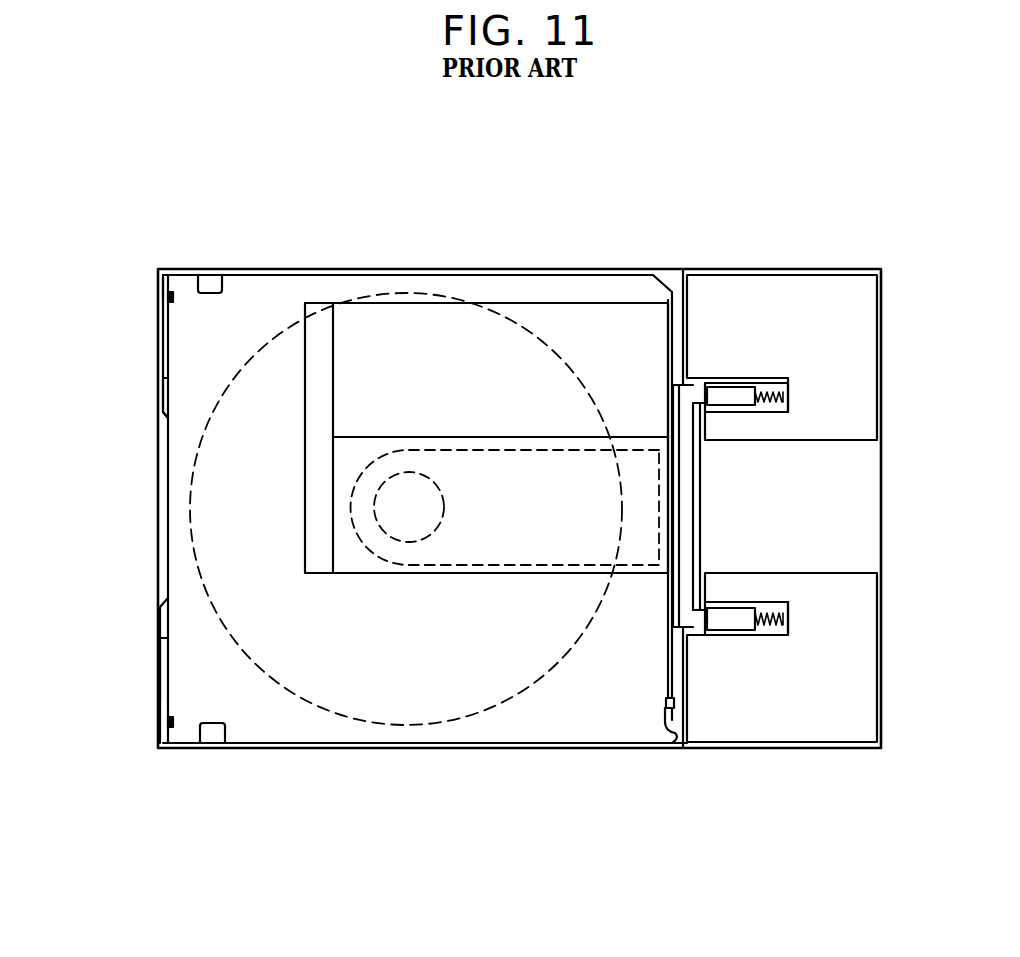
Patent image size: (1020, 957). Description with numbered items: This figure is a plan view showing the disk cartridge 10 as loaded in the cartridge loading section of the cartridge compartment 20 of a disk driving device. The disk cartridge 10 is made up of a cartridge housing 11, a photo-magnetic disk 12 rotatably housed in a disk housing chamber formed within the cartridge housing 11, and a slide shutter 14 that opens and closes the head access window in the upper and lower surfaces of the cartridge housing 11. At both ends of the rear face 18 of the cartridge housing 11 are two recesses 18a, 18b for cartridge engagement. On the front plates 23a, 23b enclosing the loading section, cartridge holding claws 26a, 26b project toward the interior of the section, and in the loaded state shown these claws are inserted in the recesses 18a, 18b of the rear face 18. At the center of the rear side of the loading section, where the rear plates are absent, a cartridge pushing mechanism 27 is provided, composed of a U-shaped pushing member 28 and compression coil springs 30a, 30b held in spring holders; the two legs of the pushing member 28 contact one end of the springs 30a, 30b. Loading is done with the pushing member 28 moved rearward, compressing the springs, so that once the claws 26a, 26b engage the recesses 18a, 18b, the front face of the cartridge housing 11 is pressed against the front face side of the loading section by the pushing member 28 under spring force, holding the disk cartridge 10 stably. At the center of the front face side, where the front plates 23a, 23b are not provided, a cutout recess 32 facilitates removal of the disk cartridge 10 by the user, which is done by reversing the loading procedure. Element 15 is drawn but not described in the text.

The disk cartridge 10 is at (525, 730).
The cartridge housing 11 is at (287, 723).
The photo-magnetic disk 12 is at (400, 723).
The slide shutter 14 is at (637, 577).
The engagement hook 15 is at (680, 705).
The rear face 18 is at (170, 515).
The recess 18a is at (178, 297).
The recess 18b is at (180, 727).
The cartridge compartment 20 is at (517, 265).
The front plate 23a is at (158, 280).
The front plate 23b is at (162, 662).
The cartridge holding claw 26a is at (168, 298).
The cartridge holding claw 26b is at (168, 725).
The cartridge pushing mechanism 27 is at (796, 514).
The pushing member 28 is at (688, 528).
The compression coil spring 30a is at (770, 398).
The compression coil spring 30b is at (770, 611).
The cutout recess 32 is at (162, 413).